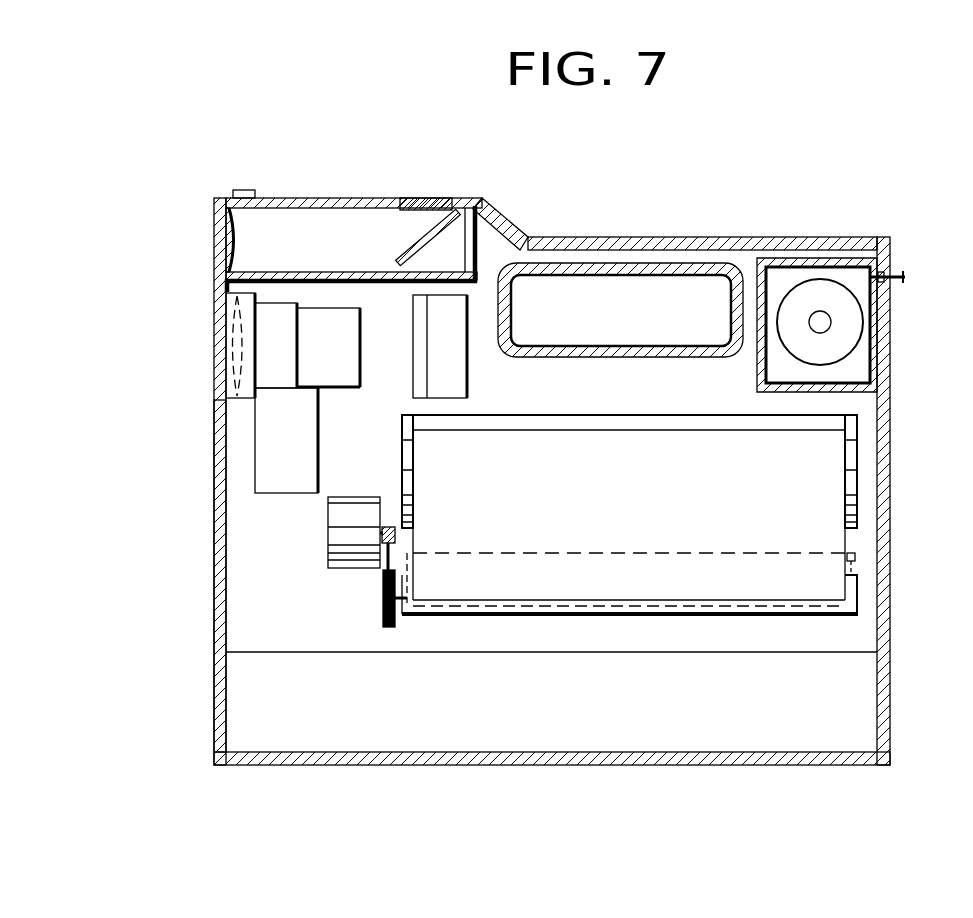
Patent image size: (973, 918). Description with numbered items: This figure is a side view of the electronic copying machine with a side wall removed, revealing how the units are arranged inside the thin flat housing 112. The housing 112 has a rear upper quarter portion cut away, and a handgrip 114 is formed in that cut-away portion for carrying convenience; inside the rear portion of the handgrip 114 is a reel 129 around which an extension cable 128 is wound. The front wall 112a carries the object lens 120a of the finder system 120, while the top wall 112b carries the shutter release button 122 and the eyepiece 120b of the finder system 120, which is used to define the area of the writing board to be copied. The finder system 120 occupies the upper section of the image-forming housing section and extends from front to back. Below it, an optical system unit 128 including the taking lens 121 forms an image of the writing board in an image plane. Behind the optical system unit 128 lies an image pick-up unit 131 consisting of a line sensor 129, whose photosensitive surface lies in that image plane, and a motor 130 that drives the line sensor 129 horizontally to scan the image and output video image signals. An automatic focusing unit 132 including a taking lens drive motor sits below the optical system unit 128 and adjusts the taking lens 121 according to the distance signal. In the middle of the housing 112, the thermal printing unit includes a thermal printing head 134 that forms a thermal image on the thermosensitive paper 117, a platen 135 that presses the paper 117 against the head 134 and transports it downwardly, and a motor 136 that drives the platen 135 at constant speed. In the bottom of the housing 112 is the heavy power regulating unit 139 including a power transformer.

The housing 112 is at (740, 782).
The front wall 112a is at (215, 530).
The top wall 112b is at (297, 198).
The handgrip 114 is at (702, 240).
The thermosensitive paper 117 is at (832, 478).
The finder system 120 is at (352, 222).
The object lens 120a is at (215, 240).
The eyepiece 120b is at (430, 198).
The taking lens 121 is at (233, 340).
The shutter release button 122 is at (247, 188).
The optical system unit 128 is at (278, 320).
The line sensor 129 is at (413, 343).
The motor 130 is at (452, 378).
The image pick-up unit 131 is at (480, 287).
The automatic focusing unit 132 is at (300, 443).
The thermal printing head 134 is at (832, 567).
The platen 135 is at (790, 612).
The motor 136 is at (338, 532).
The power regulating unit 139 is at (852, 697).